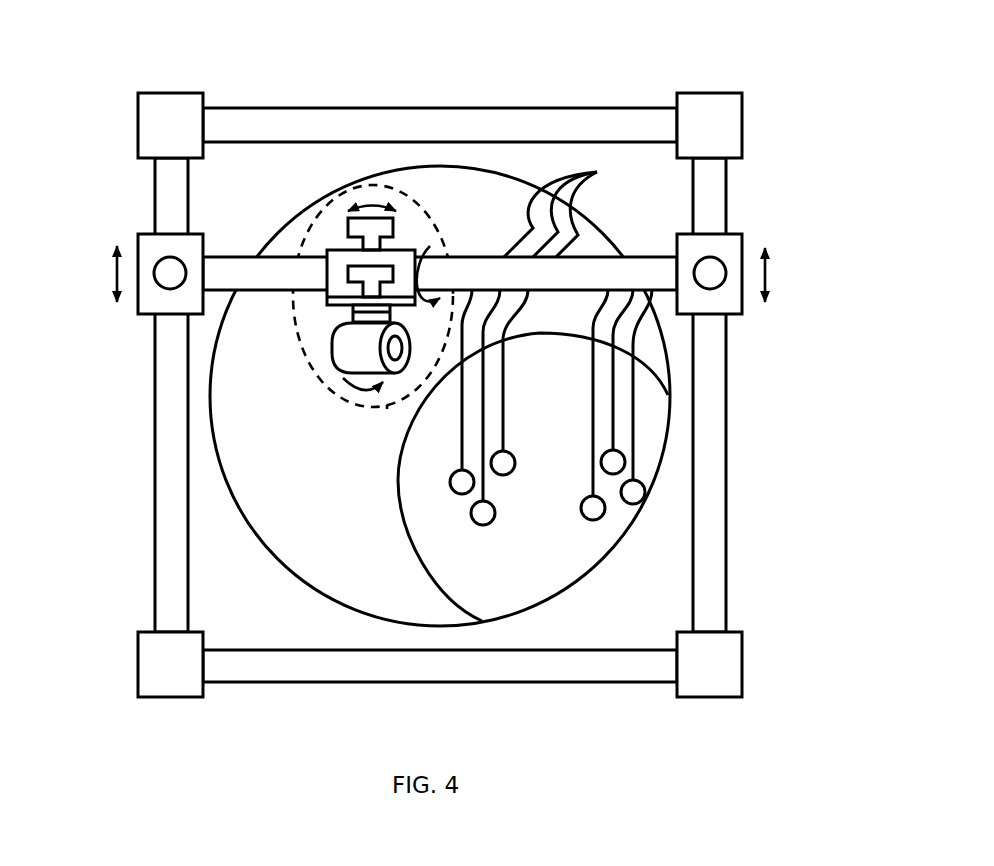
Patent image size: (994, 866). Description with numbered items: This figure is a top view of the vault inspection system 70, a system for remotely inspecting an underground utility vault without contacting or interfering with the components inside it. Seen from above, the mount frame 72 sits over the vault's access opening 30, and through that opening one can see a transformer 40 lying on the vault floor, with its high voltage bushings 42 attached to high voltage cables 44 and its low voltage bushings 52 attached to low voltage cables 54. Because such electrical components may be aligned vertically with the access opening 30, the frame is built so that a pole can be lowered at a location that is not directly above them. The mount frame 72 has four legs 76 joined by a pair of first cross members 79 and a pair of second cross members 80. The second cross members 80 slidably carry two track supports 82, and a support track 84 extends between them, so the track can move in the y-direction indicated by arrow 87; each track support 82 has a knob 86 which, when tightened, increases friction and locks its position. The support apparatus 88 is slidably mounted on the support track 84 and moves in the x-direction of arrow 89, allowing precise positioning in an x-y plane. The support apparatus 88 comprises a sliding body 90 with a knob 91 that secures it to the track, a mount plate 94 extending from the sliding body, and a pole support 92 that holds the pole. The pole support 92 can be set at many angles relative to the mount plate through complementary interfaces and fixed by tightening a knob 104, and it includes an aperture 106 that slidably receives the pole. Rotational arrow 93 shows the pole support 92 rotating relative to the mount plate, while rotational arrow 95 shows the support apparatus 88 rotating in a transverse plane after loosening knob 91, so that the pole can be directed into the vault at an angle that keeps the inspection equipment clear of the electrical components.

The access opening 30 is at (357, 589).
The transformer 40 is at (557, 592).
The high voltage bushing 42 is at (471, 513).
The high voltage cable 44 is at (597, 172).
The low voltage bushing 52 is at (585, 518).
The low voltage cable 54 is at (635, 438).
The vault inspection system 70 is at (670, 42).
The mount frame 72 is at (747, 181).
The leg 76 is at (170, 93).
The first cross member 79 is at (338, 108).
The second cross member 80 is at (155, 457).
The track support 82 is at (148, 234).
The support track 84 is at (225, 257).
The knob 86 is at (157, 289).
The arrow 87 is at (113, 276).
The support apparatus 88 is at (387, 402).
The arrow 89 is at (370, 203).
The sliding body 90 is at (327, 252).
The knob 91 is at (347, 226).
The pole support 92 is at (347, 360).
The rotational arrow 93 is at (368, 397).
The mount plate 94 is at (340, 305).
The rotational arrow 95 is at (441, 276).
The knob 104 is at (394, 274).
The aperture 106 is at (435, 375).